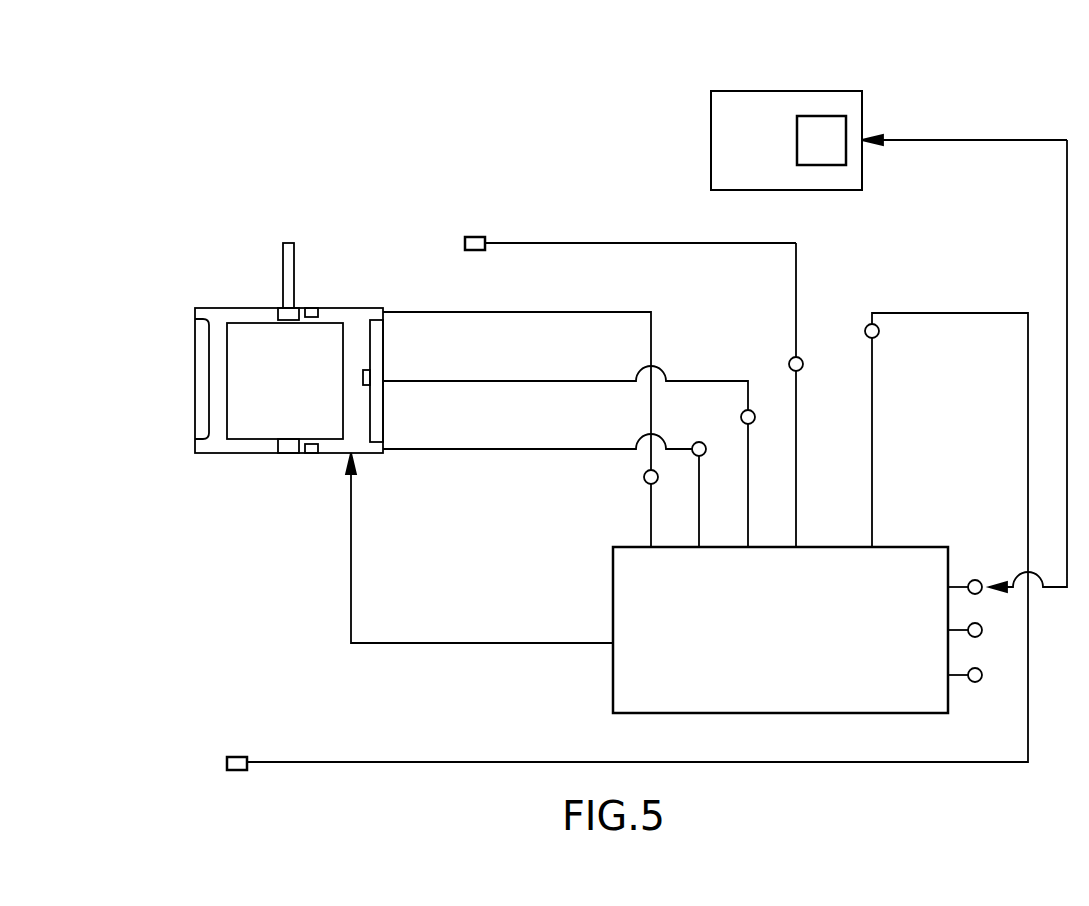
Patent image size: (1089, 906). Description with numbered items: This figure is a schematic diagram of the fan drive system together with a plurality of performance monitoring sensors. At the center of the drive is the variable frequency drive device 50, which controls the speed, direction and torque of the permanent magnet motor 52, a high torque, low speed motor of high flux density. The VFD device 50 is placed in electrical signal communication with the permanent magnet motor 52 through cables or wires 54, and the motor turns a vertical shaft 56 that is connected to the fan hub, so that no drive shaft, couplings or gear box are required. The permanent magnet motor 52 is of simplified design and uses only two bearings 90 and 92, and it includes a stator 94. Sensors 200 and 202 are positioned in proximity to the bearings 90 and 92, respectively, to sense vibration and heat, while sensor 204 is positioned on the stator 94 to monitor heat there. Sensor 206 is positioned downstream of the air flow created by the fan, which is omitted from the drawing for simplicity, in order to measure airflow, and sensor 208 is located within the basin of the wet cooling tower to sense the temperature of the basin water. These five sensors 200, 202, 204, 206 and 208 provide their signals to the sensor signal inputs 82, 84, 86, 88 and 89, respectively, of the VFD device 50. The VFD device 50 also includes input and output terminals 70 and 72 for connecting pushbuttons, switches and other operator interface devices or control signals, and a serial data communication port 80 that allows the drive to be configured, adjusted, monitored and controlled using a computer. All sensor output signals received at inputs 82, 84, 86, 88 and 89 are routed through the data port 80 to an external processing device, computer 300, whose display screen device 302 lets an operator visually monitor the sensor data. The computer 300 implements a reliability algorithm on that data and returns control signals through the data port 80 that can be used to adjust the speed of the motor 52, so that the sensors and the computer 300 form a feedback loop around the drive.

The variable frequency drive device 50 is at (613, 568).
The permanent magnet motor 52 is at (195, 375).
The cables or wires 54 is at (546, 644).
The shaft 56 is at (283, 255).
The input terminal 70 is at (981, 635).
The output terminal 72 is at (980, 681).
The serial data communication port 80 is at (975, 580).
The sensor signal input 82 is at (645, 480).
The sensor signal input 84 is at (704, 456).
The sensor signal input 86 is at (753, 423).
The sensor signal input 88 is at (802, 369).
The sensor signal input 89 is at (879, 333).
The bearing 90 is at (278, 315).
The bearing 92 is at (278, 447).
The stator 94 is at (374, 337).
The sensor 200 is at (312, 308).
The sensor 202 is at (310, 452).
The sensor 204 is at (368, 382).
The sensor 206 is at (472, 237).
The sensor 208 is at (233, 757).
The computer 300 is at (733, 90).
The display screen device 302 is at (820, 116).